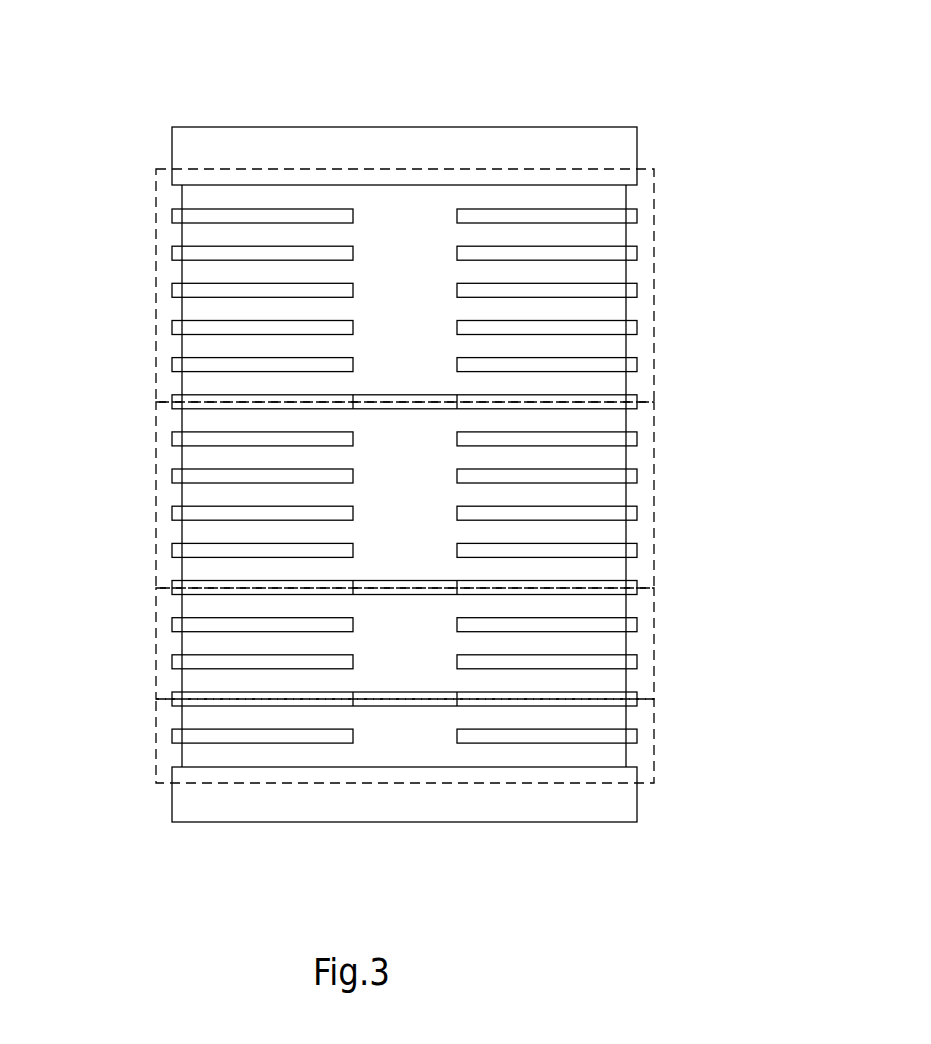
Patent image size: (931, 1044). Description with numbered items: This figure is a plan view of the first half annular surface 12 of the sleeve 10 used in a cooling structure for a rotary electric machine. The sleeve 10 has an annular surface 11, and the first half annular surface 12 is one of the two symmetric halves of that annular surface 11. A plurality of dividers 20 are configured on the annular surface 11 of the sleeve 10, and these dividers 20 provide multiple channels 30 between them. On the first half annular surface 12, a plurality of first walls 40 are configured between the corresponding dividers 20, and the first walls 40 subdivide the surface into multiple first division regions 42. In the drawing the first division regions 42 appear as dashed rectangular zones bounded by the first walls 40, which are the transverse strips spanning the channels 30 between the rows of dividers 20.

The sleeve 10 is at (613, 143).
The annular surface 11 is at (404, 393).
The first half annular surface 12 is at (408, 212).
The dividers 20 is at (616, 216).
The channels 30 is at (195, 233).
The first walls 40 is at (400, 402).
The first division regions 42 is at (654, 362).